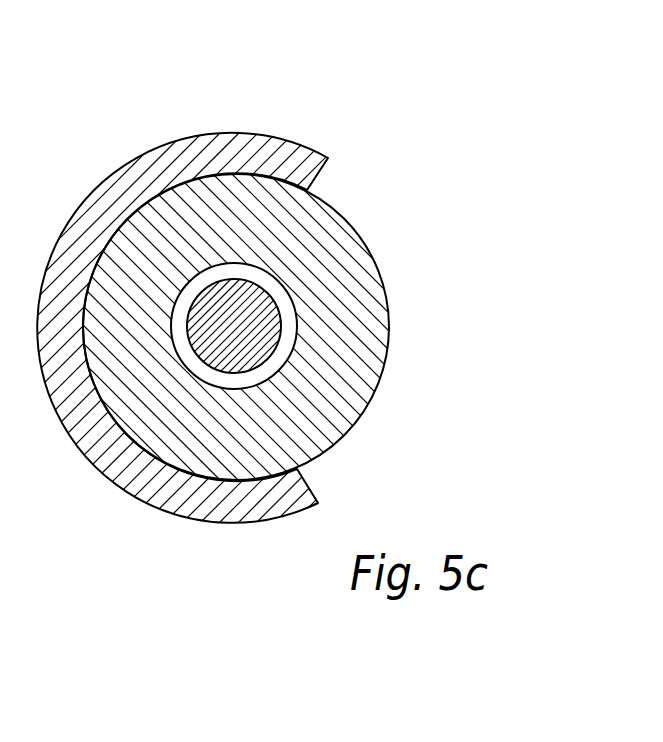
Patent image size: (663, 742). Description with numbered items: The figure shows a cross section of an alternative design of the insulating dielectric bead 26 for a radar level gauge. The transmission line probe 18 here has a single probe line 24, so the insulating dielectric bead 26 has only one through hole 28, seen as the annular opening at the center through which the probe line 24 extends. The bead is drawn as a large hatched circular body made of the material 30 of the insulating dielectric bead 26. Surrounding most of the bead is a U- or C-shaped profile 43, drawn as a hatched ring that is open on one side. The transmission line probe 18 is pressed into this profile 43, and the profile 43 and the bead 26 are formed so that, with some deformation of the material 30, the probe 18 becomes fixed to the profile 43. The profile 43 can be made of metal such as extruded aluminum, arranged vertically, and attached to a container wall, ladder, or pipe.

The transmission line probe 18 is at (262, 337).
The probe line 24 is at (231, 291).
The insulating dielectric bead 26 is at (284, 327).
The through hole 28 is at (277, 373).
The material of the insulating dielectric bead 30 is at (363, 367).
The U- or C-shaped profile 43 is at (155, 485).